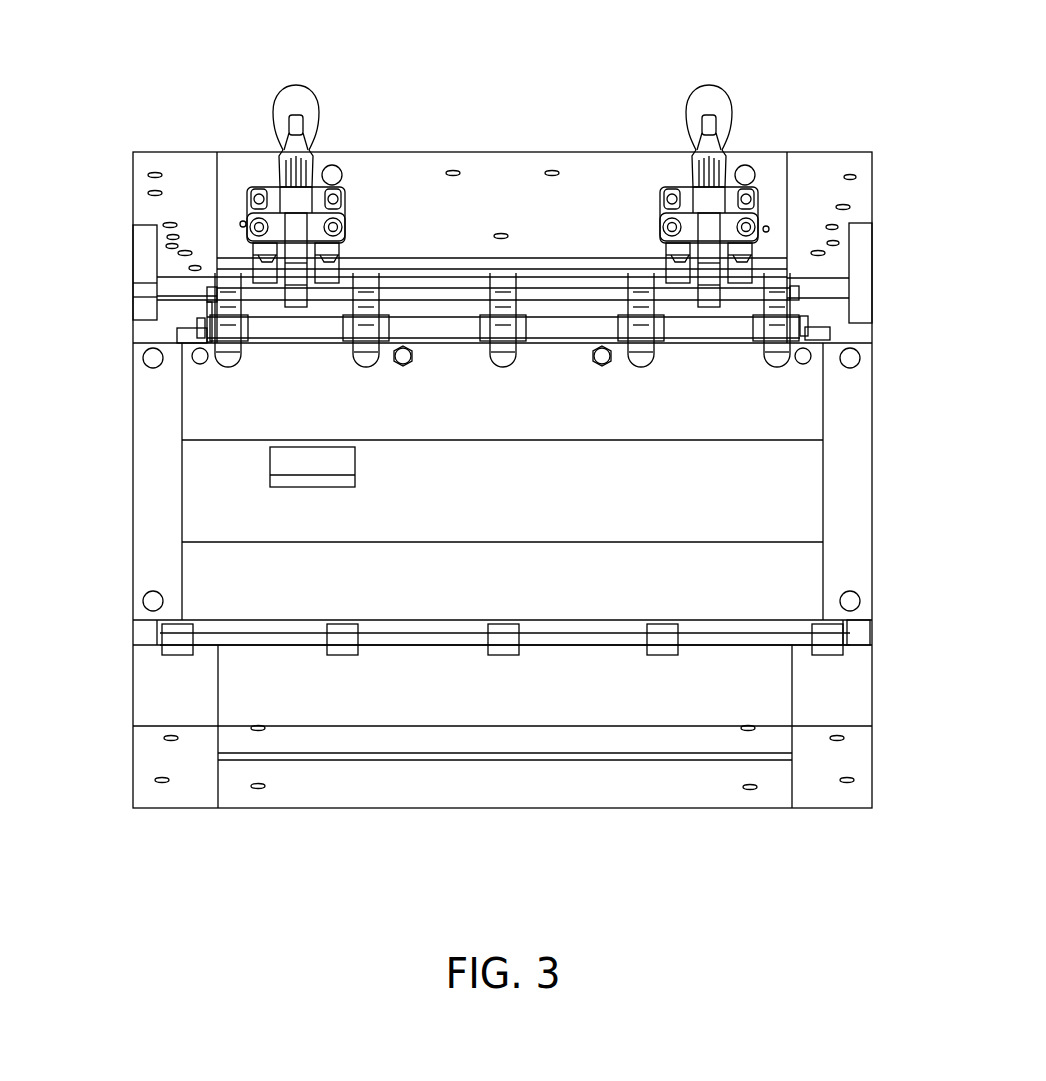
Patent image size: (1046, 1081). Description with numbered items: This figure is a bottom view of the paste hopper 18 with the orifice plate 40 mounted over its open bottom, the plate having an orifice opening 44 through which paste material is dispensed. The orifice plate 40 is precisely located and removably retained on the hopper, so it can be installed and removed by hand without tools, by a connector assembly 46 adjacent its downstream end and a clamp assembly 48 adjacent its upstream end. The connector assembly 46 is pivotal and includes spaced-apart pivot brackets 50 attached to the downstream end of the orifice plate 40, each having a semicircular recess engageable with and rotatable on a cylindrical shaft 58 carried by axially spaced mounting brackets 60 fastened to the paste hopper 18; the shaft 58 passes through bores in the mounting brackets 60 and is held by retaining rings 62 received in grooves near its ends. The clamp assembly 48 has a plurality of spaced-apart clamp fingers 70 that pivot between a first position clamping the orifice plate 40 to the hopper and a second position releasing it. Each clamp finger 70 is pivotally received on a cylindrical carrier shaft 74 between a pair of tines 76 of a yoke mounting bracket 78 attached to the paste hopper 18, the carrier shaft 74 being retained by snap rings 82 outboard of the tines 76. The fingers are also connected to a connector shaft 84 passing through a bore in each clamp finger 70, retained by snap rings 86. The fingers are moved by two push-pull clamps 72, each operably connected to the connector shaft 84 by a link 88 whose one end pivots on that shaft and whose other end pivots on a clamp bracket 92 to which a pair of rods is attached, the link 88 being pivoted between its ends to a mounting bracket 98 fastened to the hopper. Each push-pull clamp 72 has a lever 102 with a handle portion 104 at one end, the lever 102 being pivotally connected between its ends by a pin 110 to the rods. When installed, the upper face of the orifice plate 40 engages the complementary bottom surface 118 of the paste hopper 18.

The paste hopper 18 is at (103, 383).
The orifice plate 40 is at (203, 570).
The orifice opening 44 is at (293, 462).
The connector assembly 46 is at (399, 677).
The clamp assembly 48 is at (176, 215).
The pivot bracket 50 is at (828, 628).
The shaft 58 is at (270, 633).
The mounting bracket 60 is at (505, 650).
The retaining ring 62 is at (858, 648).
The clamp finger 70 is at (502, 347).
The push-pull clamp 72 is at (205, 177).
The carrier shaft 74 is at (297, 325).
The tine 76 is at (211, 317).
The yoke mounting bracket 78 is at (185, 333).
The snap ring 82 is at (805, 327).
The connector shaft 84 is at (540, 293).
The snap ring 86 is at (795, 292).
The link 88 is at (295, 273).
The clamp bracket 92 is at (237, 223).
The mounting bracket 98 is at (780, 268).
The lever 102 is at (262, 146).
The handle portion 104 is at (295, 100).
The pin 110 is at (345, 187).
The bottom surface 118 is at (788, 483).